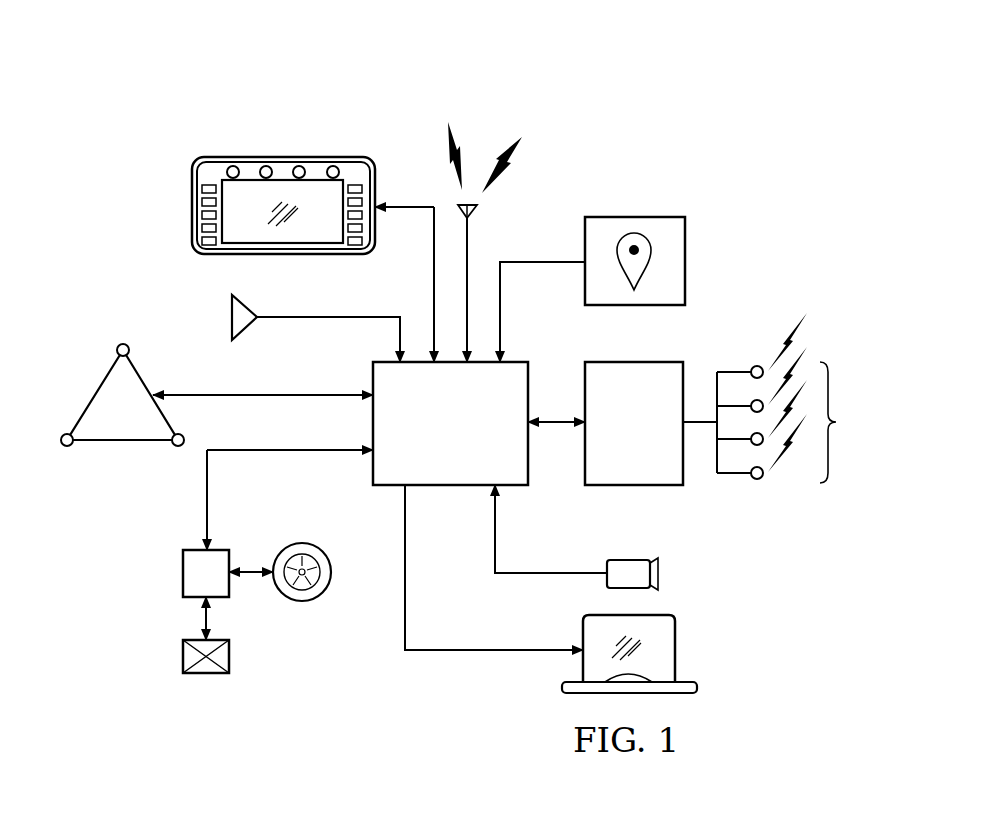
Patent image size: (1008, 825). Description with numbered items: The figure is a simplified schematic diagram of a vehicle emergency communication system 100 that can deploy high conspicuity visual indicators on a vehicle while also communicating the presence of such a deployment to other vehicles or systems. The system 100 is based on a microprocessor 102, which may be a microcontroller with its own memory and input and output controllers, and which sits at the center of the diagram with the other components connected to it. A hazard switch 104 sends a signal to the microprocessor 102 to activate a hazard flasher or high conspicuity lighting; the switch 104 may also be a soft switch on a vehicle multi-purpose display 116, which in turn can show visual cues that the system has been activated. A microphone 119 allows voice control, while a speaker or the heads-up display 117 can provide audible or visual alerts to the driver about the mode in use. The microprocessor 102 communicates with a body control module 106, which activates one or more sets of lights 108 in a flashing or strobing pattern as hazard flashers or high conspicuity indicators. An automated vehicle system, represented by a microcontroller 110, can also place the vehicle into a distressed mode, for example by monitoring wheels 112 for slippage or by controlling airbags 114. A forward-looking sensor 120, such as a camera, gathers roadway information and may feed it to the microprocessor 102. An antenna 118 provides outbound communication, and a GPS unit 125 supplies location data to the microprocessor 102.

The system 100 is at (607, 83).
The microprocessor 102 is at (471, 453).
The hazard switch 104 is at (95, 393).
The body control module 106 is at (655, 453).
The lights 108 is at (782, 398).
The microcontroller 110 is at (183, 585).
The wheels 112 is at (302, 601).
The airbags 114 is at (183, 655).
The display 116 is at (281, 157).
The heads-up display 117 is at (675, 652).
The antenna 118 is at (480, 213).
The microphone 119 is at (232, 312).
The forward-looking sensor 120 is at (628, 560).
The GPS unit 125 is at (635, 217).